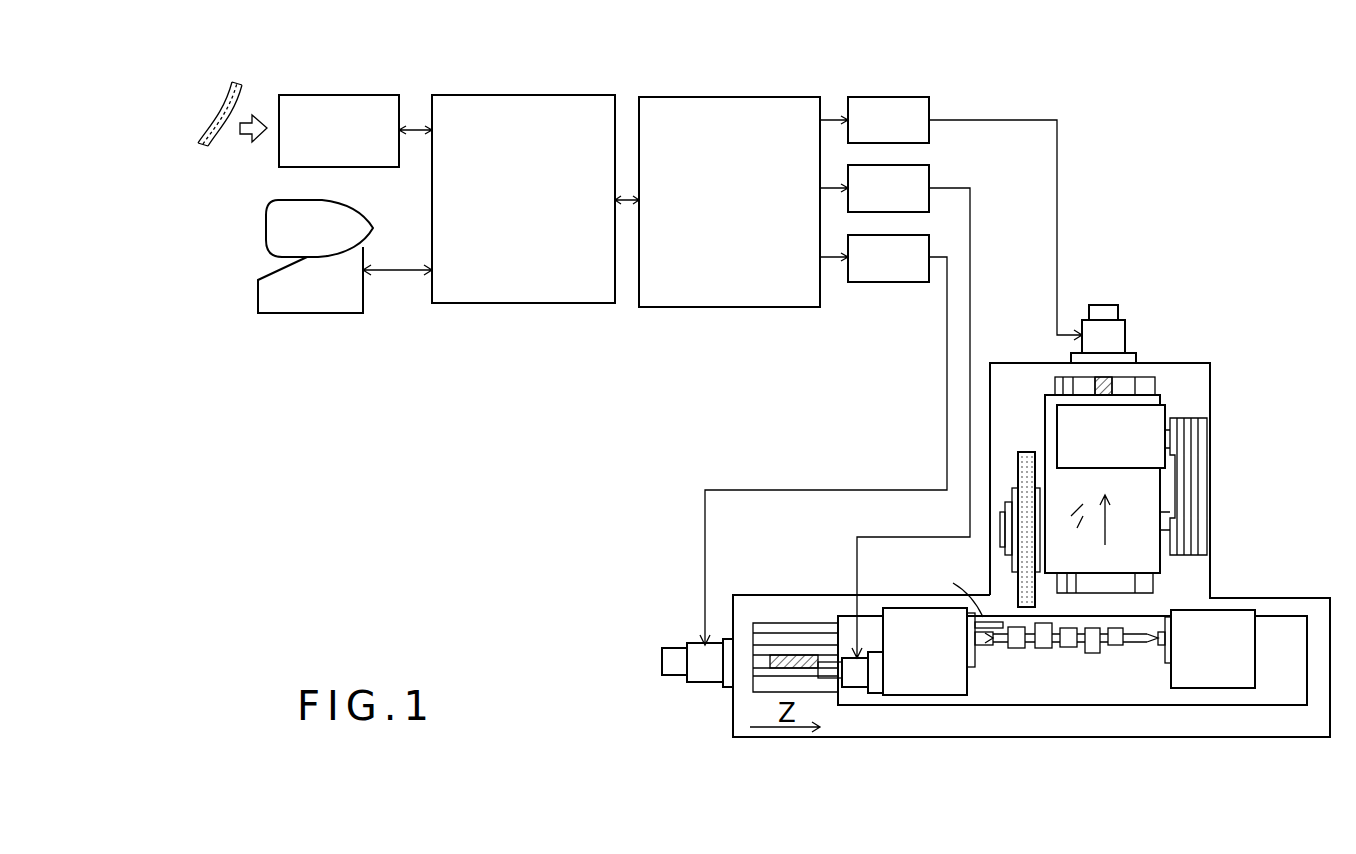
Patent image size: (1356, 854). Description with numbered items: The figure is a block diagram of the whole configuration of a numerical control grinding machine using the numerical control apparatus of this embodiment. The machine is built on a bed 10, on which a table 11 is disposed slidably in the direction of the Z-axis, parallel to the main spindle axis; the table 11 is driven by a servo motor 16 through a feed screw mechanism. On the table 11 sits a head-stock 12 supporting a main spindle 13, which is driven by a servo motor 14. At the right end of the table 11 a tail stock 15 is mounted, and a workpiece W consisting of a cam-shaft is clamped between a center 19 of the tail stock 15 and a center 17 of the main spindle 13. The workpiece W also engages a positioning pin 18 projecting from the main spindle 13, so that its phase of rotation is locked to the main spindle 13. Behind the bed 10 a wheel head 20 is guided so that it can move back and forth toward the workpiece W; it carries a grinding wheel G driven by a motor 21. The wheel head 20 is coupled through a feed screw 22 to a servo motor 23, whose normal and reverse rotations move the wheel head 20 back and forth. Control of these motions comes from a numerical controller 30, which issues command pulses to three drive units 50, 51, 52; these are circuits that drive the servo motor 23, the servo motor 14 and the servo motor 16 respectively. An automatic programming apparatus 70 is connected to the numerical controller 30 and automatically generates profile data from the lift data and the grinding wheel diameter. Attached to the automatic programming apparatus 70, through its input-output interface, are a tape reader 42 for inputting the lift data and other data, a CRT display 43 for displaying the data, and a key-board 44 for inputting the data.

The bed 10 is at (1320, 598).
The table 11 is at (1280, 705).
The head-stock 12 is at (930, 695).
The main spindle 13 is at (985, 650).
The servo motor 14 is at (855, 687).
The tail stock 15 is at (1207, 688).
The servo motor 16 is at (703, 682).
The center 17 is at (993, 640).
The positioning pin 18 is at (950, 590).
The center 19 is at (1152, 647).
The wheel head 20 is at (1160, 565).
The motor 21 is at (1165, 412).
The feed screw 22 is at (1112, 385).
The servo motor 23 is at (1120, 335).
The numerical controller 30 is at (639, 97).
The tape reader 42 is at (283, 95).
The CRT display 43 is at (285, 200).
The key-board 44 is at (258, 313).
The drive unit 50 is at (929, 99).
The drive unit 51 is at (929, 167).
The drive unit 52 is at (929, 237).
The automatic programming apparatus 70 is at (432, 97).
The grinding wheel G is at (1018, 587).
The workpiece W is at (1095, 655).